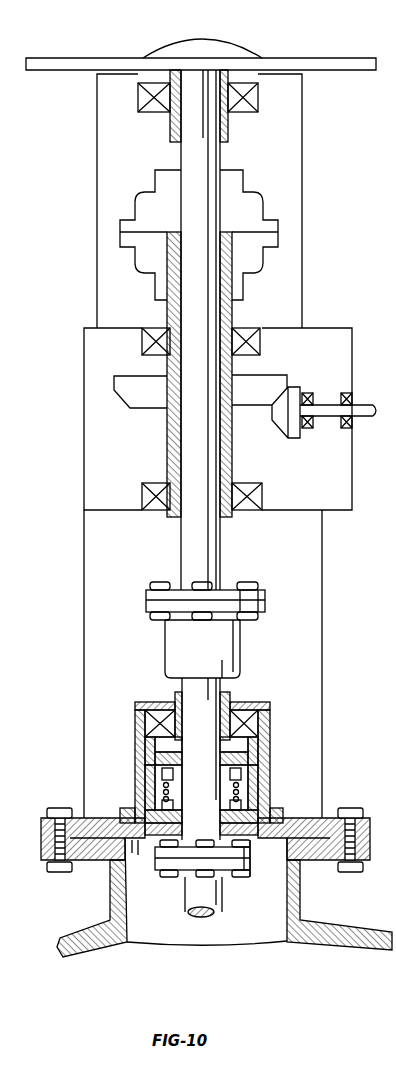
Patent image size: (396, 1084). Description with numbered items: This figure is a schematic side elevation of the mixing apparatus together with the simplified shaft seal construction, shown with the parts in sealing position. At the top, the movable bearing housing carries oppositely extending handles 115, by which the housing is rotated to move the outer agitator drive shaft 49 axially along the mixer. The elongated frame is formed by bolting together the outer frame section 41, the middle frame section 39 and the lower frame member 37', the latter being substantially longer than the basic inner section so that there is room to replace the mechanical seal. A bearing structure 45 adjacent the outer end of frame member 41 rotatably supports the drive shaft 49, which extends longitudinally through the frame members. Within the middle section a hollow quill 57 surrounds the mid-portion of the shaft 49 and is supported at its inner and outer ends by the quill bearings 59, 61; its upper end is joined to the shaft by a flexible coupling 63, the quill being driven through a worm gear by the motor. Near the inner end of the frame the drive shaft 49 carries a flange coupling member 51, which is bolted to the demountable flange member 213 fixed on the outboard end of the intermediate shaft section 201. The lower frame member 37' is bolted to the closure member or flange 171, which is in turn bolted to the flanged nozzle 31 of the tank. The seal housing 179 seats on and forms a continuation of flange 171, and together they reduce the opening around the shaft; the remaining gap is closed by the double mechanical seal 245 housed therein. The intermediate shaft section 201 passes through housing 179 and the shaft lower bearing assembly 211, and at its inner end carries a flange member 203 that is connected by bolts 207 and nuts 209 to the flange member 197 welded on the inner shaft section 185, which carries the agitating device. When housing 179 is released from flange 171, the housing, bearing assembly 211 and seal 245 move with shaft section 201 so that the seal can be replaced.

The handles 115 is at (331, 57).
The outer frame section 41 is at (302, 125).
The bearing structure 45 is at (158, 117).
The agitator drive shaft 49 is at (222, 160).
The flexible coupling 63 is at (289, 220).
The middle frame section 39 is at (352, 344).
The quill bearing 61 is at (256, 342).
The hollow quill 57 is at (167, 418).
The quill bearing 59 is at (157, 486).
The lower frame member 37' is at (225, 664).
The flange coupling member 51 is at (265, 598).
The demountable flange member 213 is at (242, 656).
The intermediate shaft section 201 is at (226, 684).
The shaft lower bearing assembly 211 is at (260, 720).
The seal housing 179 is at (266, 752).
The double mechanical seal 245 is at (257, 790).
The closure member or flange 171 is at (92, 820).
The flanged nozzle 31 is at (97, 860).
The flange member 203 is at (158, 866).
The flange member 197 is at (228, 872).
The bolts 207 is at (254, 842).
The nuts 209 is at (291, 903).
The inner shaft section 185 is at (197, 917).